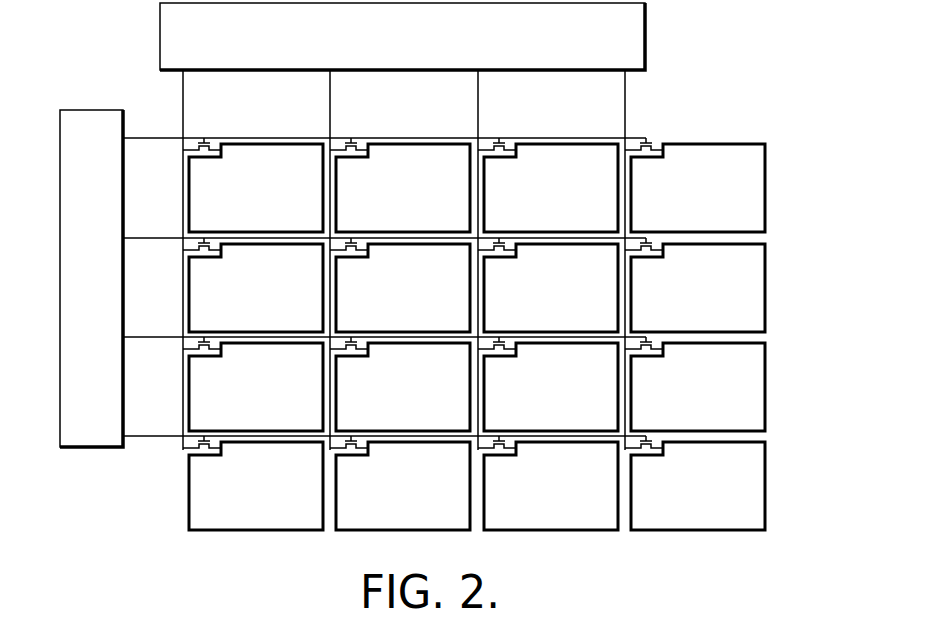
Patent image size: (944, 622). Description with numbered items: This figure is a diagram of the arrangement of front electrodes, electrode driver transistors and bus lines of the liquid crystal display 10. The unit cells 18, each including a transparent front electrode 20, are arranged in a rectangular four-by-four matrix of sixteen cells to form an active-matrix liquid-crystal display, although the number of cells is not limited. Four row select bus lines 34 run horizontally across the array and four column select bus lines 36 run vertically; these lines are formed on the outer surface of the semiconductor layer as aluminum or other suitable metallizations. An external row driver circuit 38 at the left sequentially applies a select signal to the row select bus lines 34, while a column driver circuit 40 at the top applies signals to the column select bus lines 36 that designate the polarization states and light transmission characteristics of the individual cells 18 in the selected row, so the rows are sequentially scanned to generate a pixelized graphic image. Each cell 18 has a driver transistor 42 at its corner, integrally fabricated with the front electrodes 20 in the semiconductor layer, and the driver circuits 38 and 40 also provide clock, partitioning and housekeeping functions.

The liquid crystal display 10 is at (468, 280).
The unit cell 18 is at (511, 334).
The front electrode 20 is at (765, 302).
The row select bus line 34 is at (142, 135).
The column select bus line 36 is at (625, 87).
The row driver circuit 38 is at (72, 108).
The column driver circuit 40 is at (159, 27).
The driver transistor 42 is at (648, 458).